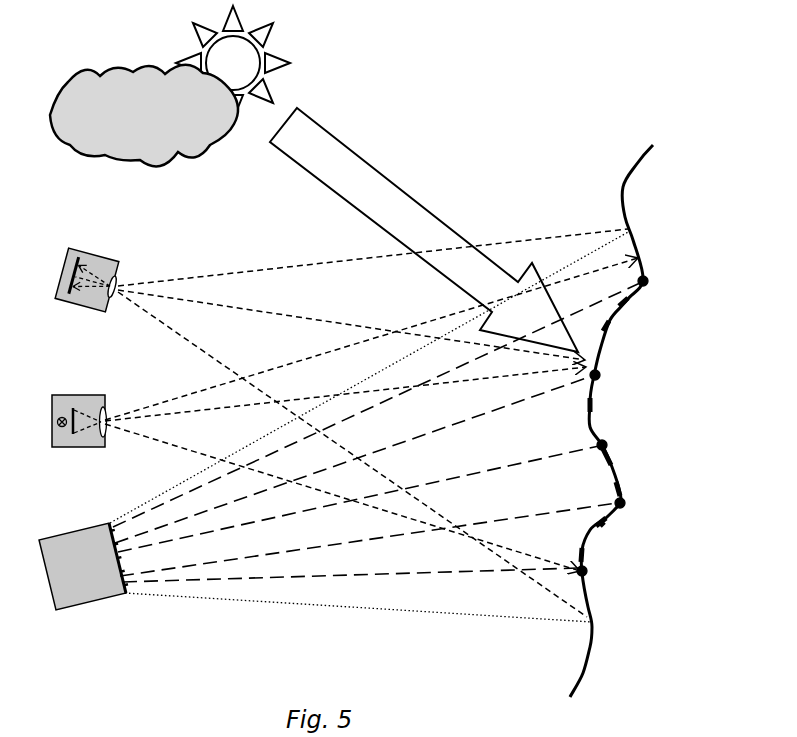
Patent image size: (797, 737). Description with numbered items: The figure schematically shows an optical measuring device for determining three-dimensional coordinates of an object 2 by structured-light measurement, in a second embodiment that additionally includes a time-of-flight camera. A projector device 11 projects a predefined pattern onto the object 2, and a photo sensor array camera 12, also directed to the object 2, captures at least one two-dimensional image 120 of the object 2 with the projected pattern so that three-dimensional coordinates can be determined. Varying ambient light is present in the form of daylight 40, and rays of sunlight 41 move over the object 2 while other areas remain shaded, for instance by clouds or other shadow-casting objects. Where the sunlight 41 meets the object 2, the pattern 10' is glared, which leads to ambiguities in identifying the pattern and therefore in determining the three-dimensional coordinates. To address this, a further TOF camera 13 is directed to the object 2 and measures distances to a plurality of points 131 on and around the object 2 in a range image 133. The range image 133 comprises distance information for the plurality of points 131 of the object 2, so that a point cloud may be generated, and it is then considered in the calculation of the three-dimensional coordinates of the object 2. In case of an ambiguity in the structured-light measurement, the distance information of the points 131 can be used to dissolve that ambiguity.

The object 2 is at (623, 187).
The glared pattern 10' is at (641, 430).
The projector device 11 is at (90, 440).
The PSA camera 12 is at (98, 263).
The TOF camera 13 is at (90, 587).
The daylight 40 is at (290, 51).
The rays of sunlight 41 is at (412, 203).
The 2D image 120 is at (338, 262).
The points 131 is at (643, 287).
The range image 133 is at (340, 608).